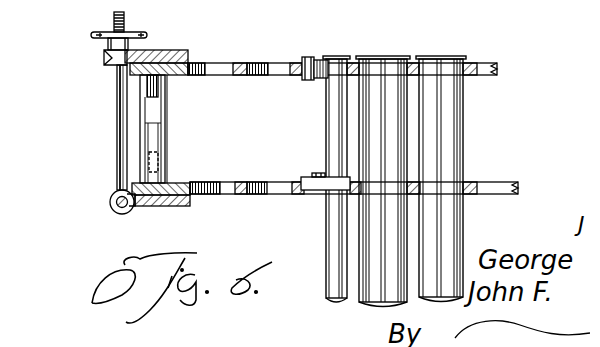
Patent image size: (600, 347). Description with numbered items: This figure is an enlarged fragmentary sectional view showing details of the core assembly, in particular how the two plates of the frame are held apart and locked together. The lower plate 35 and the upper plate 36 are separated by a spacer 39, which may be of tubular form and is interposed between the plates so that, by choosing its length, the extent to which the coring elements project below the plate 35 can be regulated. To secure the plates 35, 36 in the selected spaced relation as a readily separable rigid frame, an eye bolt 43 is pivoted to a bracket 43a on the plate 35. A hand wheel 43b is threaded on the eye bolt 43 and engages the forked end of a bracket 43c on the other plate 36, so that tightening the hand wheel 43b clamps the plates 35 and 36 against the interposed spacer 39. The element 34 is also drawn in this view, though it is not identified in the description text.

The adjusting screw 34 is at (132, 32).
The plate 35 is at (243, 182).
The plate 36 is at (245, 58).
The spacer 39 is at (165, 133).
The eye bolt 43 is at (117, 130).
The bracket 43a is at (168, 206).
The hand wheel 43b is at (95, 38).
The bracket 43c is at (167, 62).